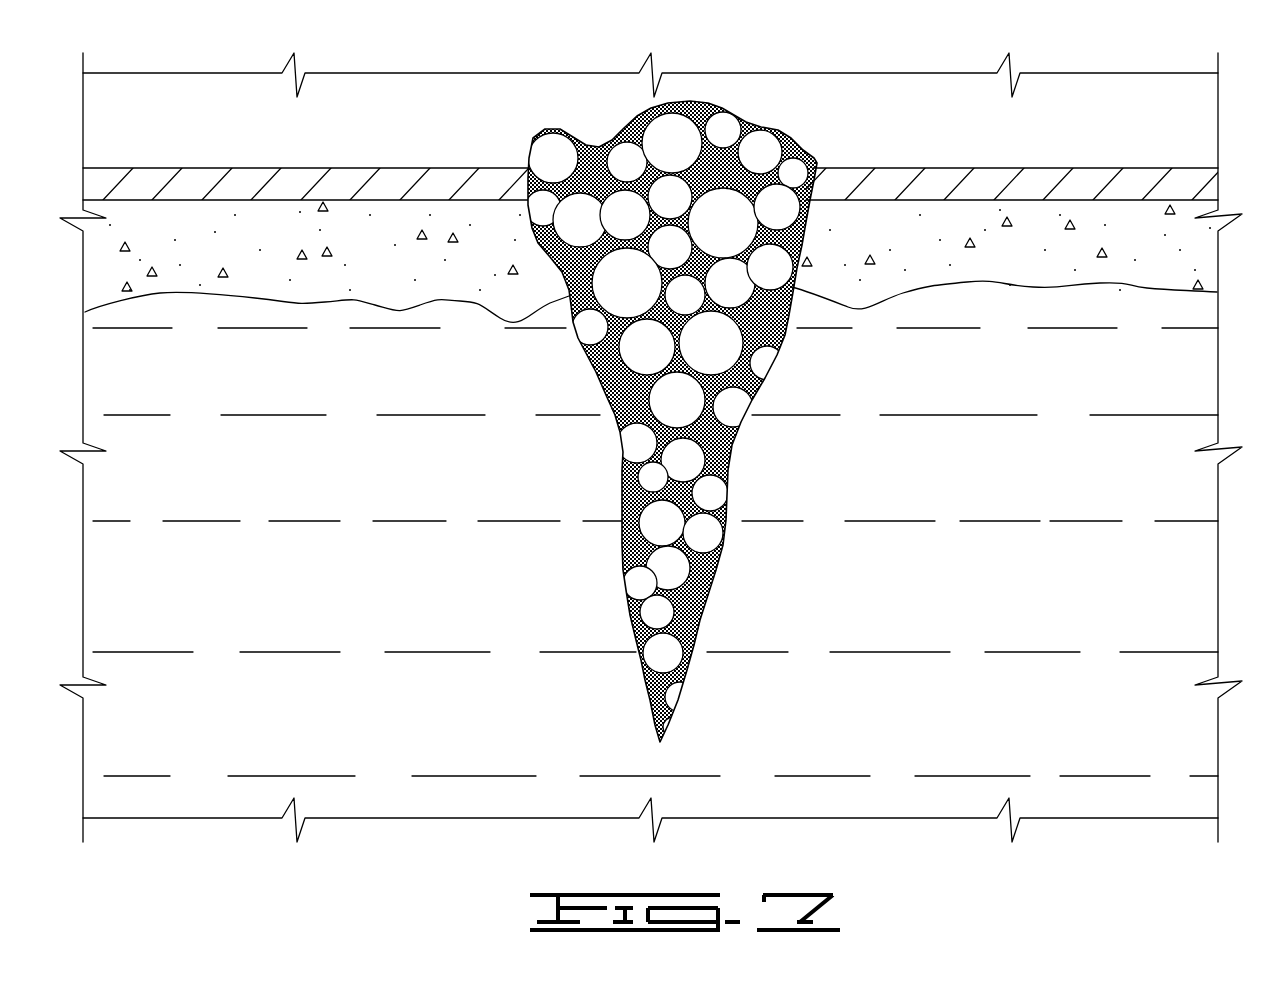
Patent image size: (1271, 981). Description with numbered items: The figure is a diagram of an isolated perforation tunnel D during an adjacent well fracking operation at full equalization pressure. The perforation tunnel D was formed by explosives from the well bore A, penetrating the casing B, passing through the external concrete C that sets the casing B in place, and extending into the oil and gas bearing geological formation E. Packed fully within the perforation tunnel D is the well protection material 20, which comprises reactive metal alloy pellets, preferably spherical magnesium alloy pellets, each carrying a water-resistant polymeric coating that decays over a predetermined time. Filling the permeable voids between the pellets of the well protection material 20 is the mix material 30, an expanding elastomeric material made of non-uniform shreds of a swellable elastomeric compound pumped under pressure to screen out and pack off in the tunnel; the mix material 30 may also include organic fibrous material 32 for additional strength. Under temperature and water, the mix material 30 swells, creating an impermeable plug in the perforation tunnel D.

The well protection material 20 is at (555, 152).
The mix material 30 is at (689, 383).
The organic fibrous material 32 is at (722, 143).
The well bore A is at (372, 130).
The casing B is at (217, 174).
The concrete C is at (1037, 238).
The perforation tunnel D is at (675, 383).
The geological formation E is at (361, 482).